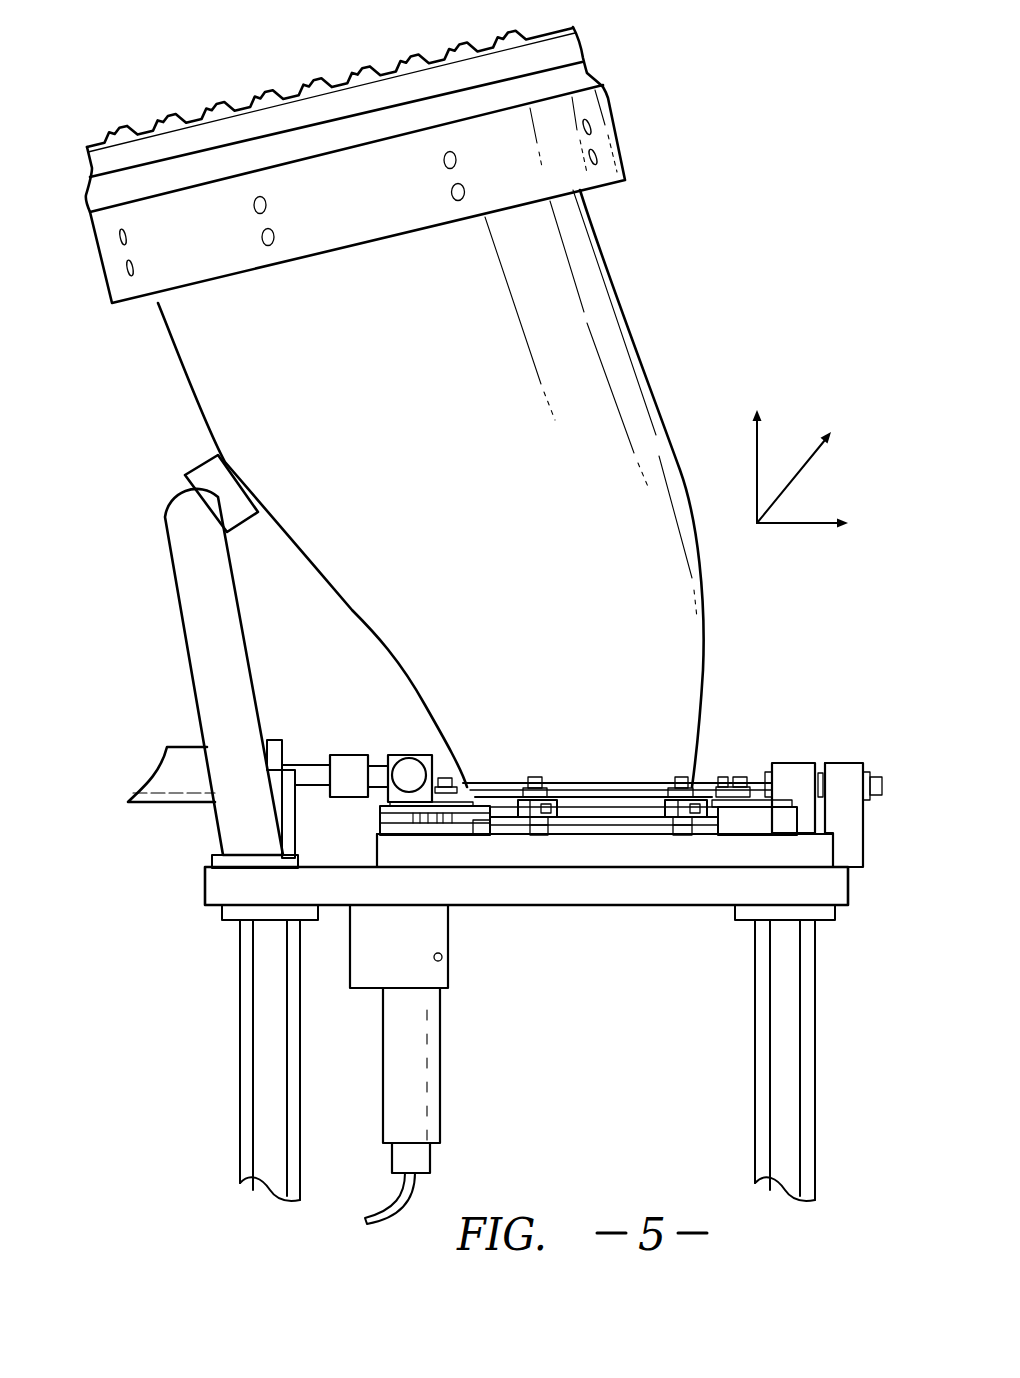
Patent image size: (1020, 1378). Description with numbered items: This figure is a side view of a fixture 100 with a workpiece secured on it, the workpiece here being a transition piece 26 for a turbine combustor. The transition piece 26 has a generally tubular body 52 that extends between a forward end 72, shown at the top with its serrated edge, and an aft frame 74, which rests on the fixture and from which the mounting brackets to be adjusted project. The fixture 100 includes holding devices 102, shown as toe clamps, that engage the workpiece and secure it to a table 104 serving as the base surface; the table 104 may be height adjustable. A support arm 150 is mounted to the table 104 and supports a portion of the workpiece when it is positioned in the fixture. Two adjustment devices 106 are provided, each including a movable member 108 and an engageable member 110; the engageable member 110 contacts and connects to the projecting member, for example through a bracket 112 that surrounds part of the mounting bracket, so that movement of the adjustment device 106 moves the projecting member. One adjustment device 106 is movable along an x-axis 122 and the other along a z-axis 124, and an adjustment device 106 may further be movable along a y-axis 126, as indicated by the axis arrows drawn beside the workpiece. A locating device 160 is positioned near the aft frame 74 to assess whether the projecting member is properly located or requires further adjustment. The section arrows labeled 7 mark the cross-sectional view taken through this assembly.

The section line 7- 7 is at (410, 747).
The transition piece 26 is at (687, 341).
The body 52 is at (548, 313).
The forward end 72 is at (338, 170).
The aft frame 74 is at (643, 780).
The fixture 100 is at (817, 723).
The holding device 102 is at (528, 807).
The table 104 is at (480, 890).
The adjustment device 106 is at (183, 812).
The movable member 108 is at (175, 777).
The engageable member 110 is at (327, 758).
The bracket 112 is at (351, 763).
The x-axis 122 is at (803, 523).
The z-axis 124 is at (757, 457).
The y-axis 126 is at (800, 467).
The support arm 150 is at (168, 617).
The locating device 160 is at (417, 750).